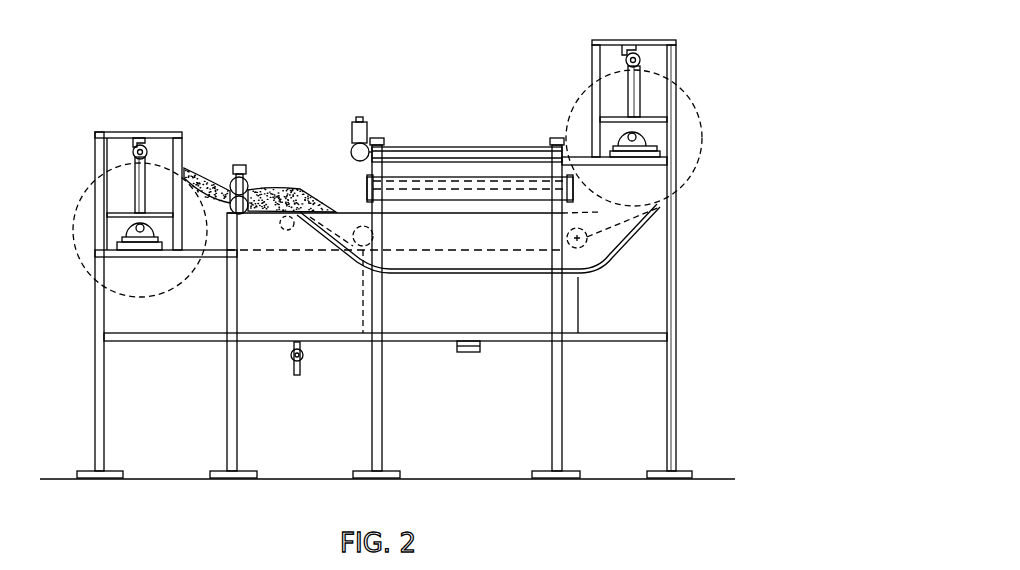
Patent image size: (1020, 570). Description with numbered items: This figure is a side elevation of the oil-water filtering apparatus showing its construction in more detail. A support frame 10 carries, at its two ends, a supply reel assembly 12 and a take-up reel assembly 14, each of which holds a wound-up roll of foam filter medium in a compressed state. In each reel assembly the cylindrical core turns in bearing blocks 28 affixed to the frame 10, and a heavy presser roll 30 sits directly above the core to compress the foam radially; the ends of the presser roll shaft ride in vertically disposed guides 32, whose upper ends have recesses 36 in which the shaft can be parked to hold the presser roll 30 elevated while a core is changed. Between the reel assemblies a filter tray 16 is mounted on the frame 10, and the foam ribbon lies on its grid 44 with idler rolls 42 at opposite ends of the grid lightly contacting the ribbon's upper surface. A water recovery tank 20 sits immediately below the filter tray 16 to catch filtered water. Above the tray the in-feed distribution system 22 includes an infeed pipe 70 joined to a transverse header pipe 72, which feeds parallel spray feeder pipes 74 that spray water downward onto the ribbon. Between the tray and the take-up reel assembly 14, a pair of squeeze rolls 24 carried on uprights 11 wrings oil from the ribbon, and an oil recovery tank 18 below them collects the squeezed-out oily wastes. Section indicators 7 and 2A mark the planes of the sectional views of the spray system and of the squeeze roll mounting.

The support frame 10 is at (590, 55).
The uprights 11 is at (234, 170).
The supply reel assembly 12 is at (568, 108).
The take-up reel assembly 14 is at (182, 171).
The filter tray 16 is at (608, 270).
The oil recovery tank 18 is at (277, 315).
The water recovery tank 20 is at (435, 316).
The in-feed distribution system 22 is at (429, 129).
The squeeze rolls 24 is at (246, 174).
The bearing blocks 28 is at (128, 222).
The presser roll 30 is at (148, 150).
The guides 32 is at (140, 200).
The recesses 36 is at (134, 144).
The idler rolls 42 is at (373, 237).
The grid 44 is at (293, 230).
The infeed pipe 70 is at (367, 125).
The header pipe 72 is at (351, 152).
The spray feeder pipes 74 is at (443, 150).
The section line 7 is at (492, 122).
The section line 2A is at (267, 173).